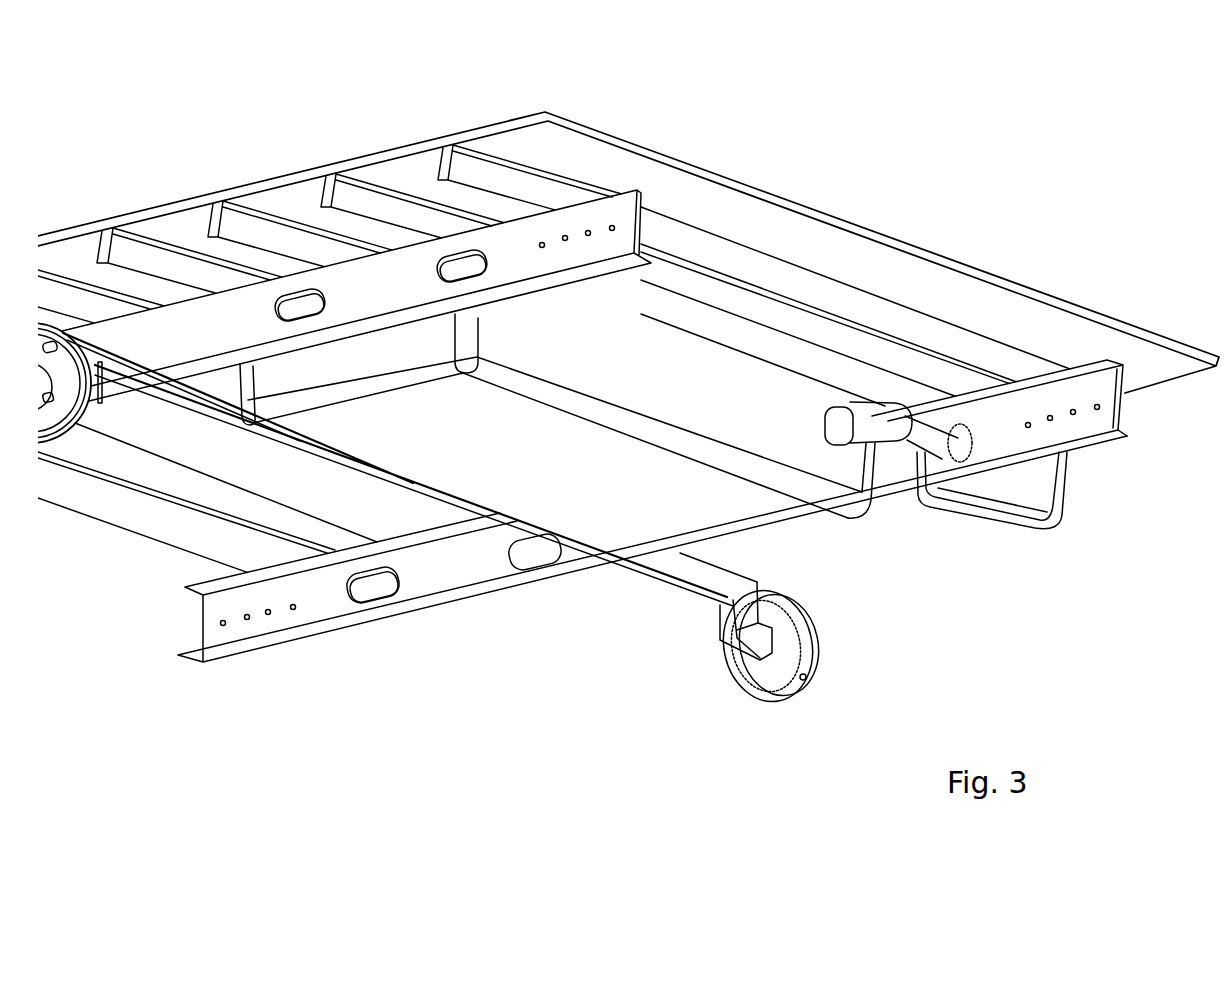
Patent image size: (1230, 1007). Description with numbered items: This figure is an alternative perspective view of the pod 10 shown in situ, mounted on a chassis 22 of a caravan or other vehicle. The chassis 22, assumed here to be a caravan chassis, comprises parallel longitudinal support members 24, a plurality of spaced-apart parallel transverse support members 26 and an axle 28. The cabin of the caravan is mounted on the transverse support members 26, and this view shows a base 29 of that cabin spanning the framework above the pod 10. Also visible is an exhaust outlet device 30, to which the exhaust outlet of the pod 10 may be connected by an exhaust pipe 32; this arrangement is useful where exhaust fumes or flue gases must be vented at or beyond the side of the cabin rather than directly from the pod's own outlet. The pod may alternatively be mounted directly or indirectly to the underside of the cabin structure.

The pod 10 is at (812, 545).
The chassis 22 is at (518, 598).
The longitudinal support members 24 is at (617, 215).
The transverse support members 26 is at (777, 278).
The axle 28 is at (693, 580).
The base 29 is at (915, 265).
The exhaust outlet device 30 is at (1005, 520).
The exhaust pipe 32 is at (880, 430).